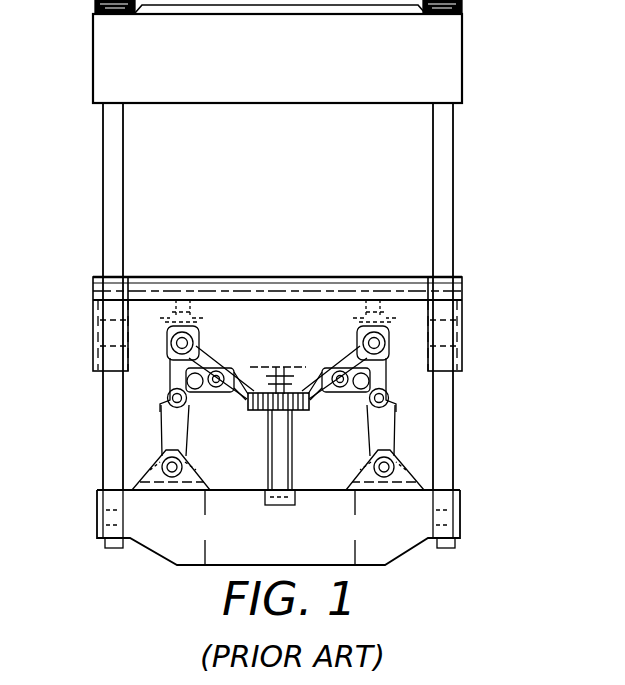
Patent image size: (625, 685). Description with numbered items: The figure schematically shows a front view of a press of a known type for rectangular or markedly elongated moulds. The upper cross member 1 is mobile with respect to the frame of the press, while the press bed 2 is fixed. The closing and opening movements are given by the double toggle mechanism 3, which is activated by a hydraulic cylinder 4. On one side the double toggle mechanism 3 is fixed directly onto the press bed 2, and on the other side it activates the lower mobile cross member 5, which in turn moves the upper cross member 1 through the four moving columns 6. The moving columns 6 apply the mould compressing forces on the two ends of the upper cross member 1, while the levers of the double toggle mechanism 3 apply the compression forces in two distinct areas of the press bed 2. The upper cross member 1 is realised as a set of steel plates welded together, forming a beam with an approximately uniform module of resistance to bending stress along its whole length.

The upper cross member 1 is at (462, 53).
The press bed 2 is at (93, 328).
The double toggle mechanism 3 is at (163, 352).
The hydraulic cylinder 4 is at (268, 450).
The lower mobile cross member 5 is at (462, 515).
The moving columns 6 is at (103, 165).